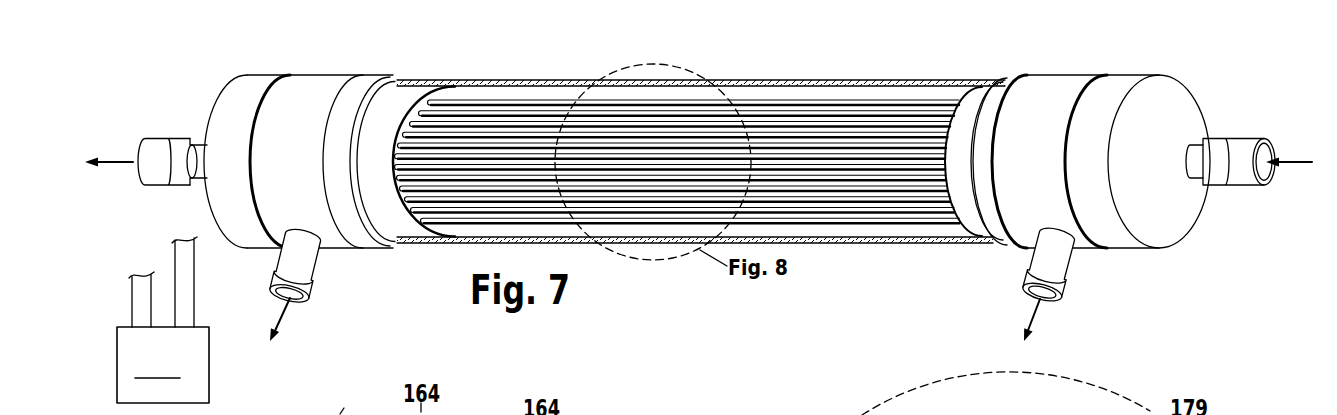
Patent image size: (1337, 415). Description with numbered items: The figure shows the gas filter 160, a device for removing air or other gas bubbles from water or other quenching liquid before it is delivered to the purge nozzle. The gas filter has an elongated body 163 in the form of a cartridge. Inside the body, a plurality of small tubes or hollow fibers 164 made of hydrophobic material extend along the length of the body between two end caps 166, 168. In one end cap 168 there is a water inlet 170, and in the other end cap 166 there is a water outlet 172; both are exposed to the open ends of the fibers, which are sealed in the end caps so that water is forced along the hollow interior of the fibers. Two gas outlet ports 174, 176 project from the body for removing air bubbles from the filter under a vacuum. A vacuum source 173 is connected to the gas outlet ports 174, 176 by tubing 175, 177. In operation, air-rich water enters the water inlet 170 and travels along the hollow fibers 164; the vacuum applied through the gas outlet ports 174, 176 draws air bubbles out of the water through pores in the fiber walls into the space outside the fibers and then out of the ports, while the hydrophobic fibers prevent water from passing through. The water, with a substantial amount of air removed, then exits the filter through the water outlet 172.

The gas filter 160 is at (704, 150).
The elongated body 163 is at (493, 97).
The hollow fibers 164 is at (885, 112).
The end cap 166 is at (245, 105).
The end cap 168 is at (1117, 90).
The water inlet 170 is at (1242, 157).
The water outlet 172 is at (155, 150).
The vacuum source 173 is at (163, 365).
The gas outlet port 174 is at (308, 292).
The tubing 175 is at (142, 288).
The gas outlet port 176 is at (1050, 263).
The tubing 177 is at (182, 262).